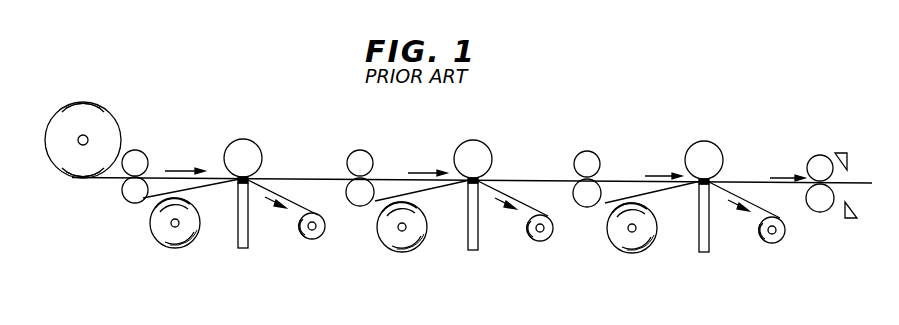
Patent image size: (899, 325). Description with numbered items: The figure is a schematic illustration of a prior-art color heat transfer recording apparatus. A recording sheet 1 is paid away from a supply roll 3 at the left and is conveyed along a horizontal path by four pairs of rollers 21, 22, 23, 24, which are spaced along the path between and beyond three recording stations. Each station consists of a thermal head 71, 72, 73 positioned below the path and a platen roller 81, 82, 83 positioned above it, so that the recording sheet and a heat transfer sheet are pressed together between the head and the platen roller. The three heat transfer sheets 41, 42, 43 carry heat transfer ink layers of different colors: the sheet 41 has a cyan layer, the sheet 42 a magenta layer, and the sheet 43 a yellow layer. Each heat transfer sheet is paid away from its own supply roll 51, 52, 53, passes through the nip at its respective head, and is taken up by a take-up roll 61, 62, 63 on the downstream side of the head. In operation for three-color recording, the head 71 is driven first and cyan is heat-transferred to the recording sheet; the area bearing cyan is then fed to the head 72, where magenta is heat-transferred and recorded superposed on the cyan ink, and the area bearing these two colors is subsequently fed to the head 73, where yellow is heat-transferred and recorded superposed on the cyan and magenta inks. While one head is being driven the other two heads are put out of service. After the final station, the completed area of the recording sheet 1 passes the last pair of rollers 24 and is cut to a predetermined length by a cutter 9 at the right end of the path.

The recording sheet 1 is at (316, 176).
The supply roll 3 is at (88, 139).
The pair of rollers 21 is at (146, 152).
The pair of rollers 22 is at (368, 150).
The pair of rollers 23 is at (594, 151).
The pair of rollers 24 is at (826, 155).
The heat transfer sheet 41 is at (205, 196).
The heat transfer sheet 42 is at (437, 200).
The heat transfer sheet 43 is at (667, 203).
The supply roll 51 is at (172, 227).
The supply roll 52 is at (399, 231).
The supply roll 53 is at (629, 232).
The take-up roll 61 is at (314, 232).
The take-up roll 62 is at (544, 234).
The take-up roll 63 is at (774, 236).
The thermal head 71 is at (243, 250).
The thermal head 72 is at (472, 252).
The thermal head 73 is at (702, 254).
The platen roller 81 is at (256, 141).
The platen roller 82 is at (480, 141).
The platen roller 83 is at (712, 142).
The cutter 9 is at (846, 220).